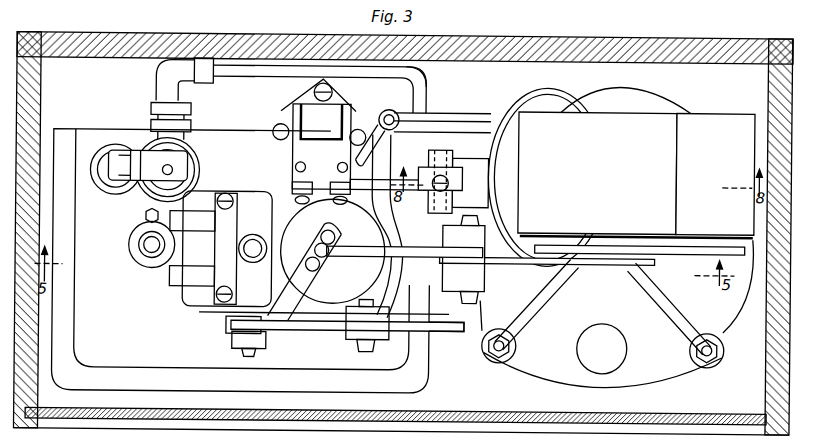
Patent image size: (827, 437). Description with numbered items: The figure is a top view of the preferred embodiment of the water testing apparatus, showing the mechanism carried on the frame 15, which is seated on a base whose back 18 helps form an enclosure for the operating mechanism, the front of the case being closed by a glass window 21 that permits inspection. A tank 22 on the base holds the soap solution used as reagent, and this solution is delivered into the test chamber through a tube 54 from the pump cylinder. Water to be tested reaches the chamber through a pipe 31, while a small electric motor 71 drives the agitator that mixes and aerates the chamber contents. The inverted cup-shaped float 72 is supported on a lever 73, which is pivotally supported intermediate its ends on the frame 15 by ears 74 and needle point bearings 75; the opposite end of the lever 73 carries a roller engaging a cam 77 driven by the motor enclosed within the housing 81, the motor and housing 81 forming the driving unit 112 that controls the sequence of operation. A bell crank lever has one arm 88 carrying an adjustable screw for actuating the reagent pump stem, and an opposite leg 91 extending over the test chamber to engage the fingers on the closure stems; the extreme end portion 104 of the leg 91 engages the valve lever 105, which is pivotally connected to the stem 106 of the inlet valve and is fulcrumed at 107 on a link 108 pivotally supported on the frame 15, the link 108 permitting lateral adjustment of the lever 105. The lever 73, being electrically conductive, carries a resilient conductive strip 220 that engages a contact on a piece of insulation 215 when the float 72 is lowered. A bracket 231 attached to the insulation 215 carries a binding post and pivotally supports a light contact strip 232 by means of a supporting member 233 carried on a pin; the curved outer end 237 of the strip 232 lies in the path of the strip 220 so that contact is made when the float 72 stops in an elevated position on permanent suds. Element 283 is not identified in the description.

The back 18 is at (257, 44).
The window 21 is at (503, 414).
The frame 15 is at (241, 225).
The pipe 31 is at (413, 79).
The stem 106 is at (200, 175).
The valve lever 105 is at (202, 176).
The link 108 is at (107, 178).
The fulcrum 107 is at (128, 186).
The electric motor 71 is at (172, 291).
The extreme end portion 104 is at (280, 180).
The tube 54 is at (370, 113).
The leg 91 is at (380, 180).
The arm 88 is at (465, 175).
The needle point bearings 75 is at (480, 222).
The housing 81 is at (621, 177).
The driving unit 112 is at (698, 110).
The cam 77 is at (687, 252).
The lever 73 is at (517, 263).
The tank 22 is at (616, 313).
The ears 74 is at (473, 283).
The bracket 231 is at (400, 303).
The float 72 is at (324, 262).
The strip of conductive material 220 is at (233, 327).
The piece of insulation 215 is at (303, 347).
The curved end 237 is at (253, 329).
The contact strip 232 is at (337, 331).
The supporting member 233 is at (378, 339).
The rod end 283 is at (447, 332).